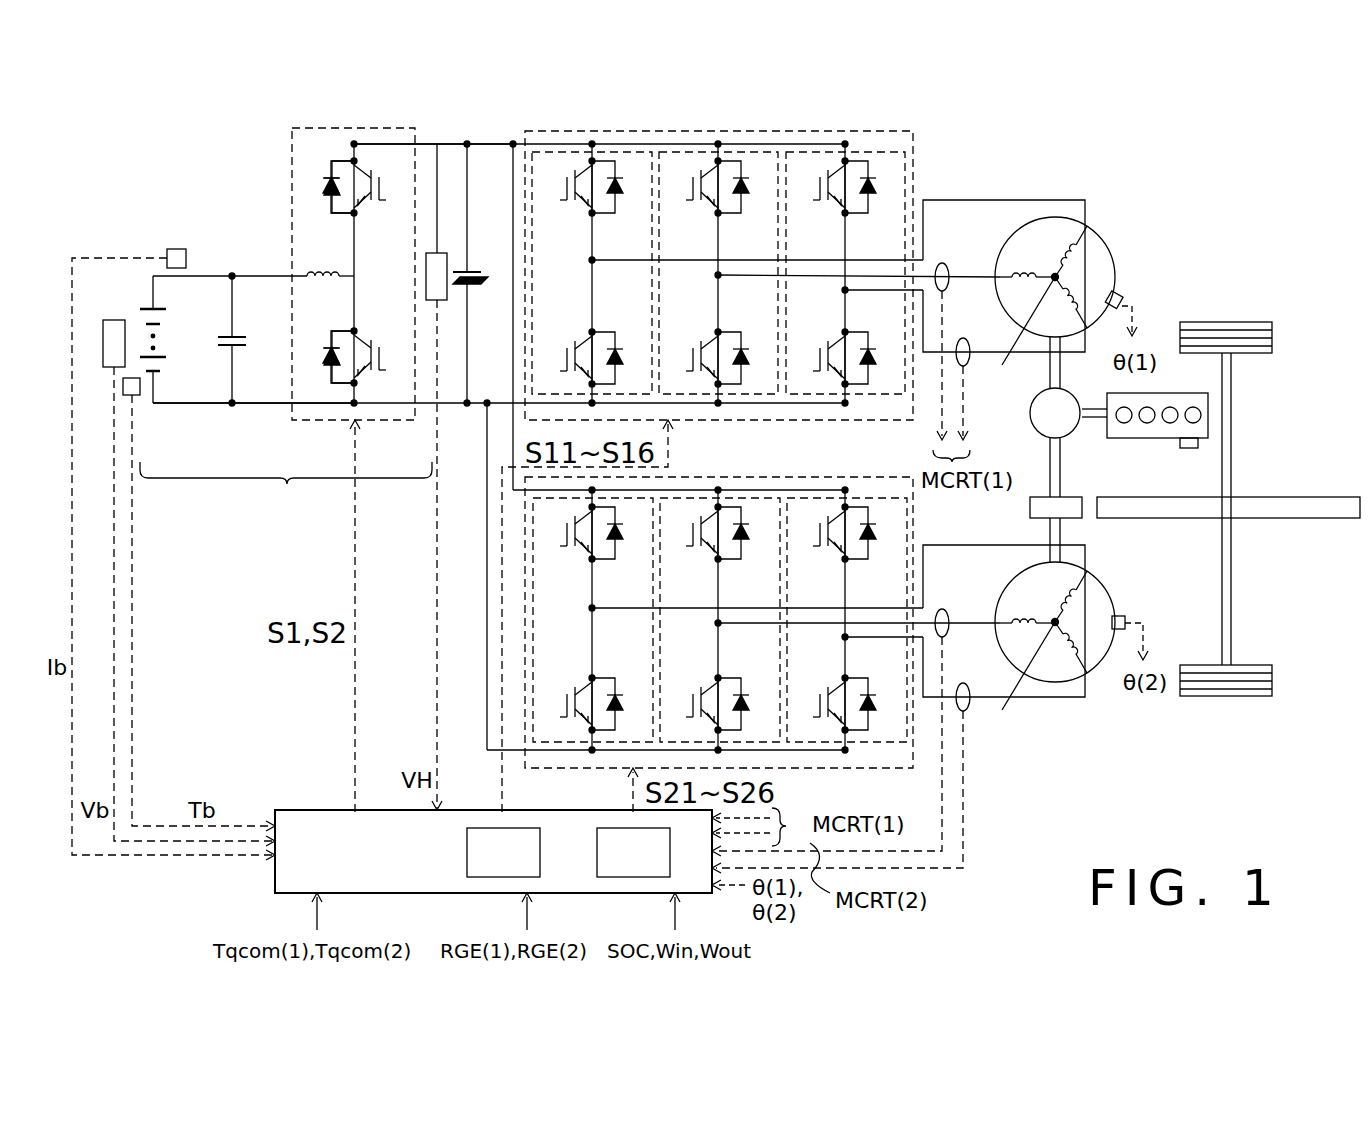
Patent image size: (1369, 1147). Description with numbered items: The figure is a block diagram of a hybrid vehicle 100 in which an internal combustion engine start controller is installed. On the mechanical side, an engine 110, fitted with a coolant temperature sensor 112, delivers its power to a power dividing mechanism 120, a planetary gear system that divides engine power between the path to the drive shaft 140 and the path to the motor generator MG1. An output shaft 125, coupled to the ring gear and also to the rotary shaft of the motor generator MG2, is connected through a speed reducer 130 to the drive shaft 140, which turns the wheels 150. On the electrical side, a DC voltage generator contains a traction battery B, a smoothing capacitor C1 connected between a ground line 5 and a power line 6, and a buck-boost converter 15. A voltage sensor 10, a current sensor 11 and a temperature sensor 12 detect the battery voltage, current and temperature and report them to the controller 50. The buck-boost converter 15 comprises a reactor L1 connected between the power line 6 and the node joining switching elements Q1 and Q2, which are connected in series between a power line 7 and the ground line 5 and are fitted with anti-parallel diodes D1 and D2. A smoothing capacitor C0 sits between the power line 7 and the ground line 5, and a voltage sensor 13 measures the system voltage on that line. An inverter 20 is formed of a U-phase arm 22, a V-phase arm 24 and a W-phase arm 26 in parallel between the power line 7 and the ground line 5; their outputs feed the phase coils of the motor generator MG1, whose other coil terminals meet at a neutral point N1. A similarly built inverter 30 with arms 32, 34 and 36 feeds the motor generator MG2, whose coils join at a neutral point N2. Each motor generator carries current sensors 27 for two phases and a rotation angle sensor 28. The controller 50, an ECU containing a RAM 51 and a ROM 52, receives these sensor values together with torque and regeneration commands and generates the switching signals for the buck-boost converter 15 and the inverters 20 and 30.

The hybrid vehicle 100 is at (1266, 136).
The ground line 5 is at (196, 404).
The power line 6 is at (262, 276).
The power line 7 is at (488, 144).
The voltage sensor 10 is at (113, 320).
The current sensor 11 is at (176, 249).
The temperature sensor 12 is at (140, 393).
The voltage sensor 13 is at (437, 253).
The buck-boost converter 15 is at (302, 420).
The inverter 20 is at (810, 420).
The U-phase arm 22 is at (614, 152).
The V-phase arm 24 is at (742, 152).
The W-phase arm 26 is at (868, 152).
The current sensors 27 is at (945, 263).
The rotation angle sensor 28 is at (1120, 293).
The inverter 30 is at (870, 768).
The U-phase arm 32 is at (650, 490).
The V-phase arm 34 is at (740, 490).
The W-phase arm 36 is at (868, 490).
The controller 50 is at (493, 822).
The RAM 51 is at (540, 852).
The ROM 52 is at (670, 852).
The engine 110 is at (1150, 393).
The coolant temperature sensor 112 is at (1186, 448).
The power dividing mechanism 120 is at (1030, 413).
The output shaft 125 is at (1050, 448).
The speed reducer 130 is at (1090, 494).
The drive shaft 140 is at (1232, 458).
The wheels 150 is at (1226, 322).
The traction battery B is at (165, 308).
The smoothing capacitor C1 is at (246, 338).
The smoothing capacitor C0 is at (476, 270).
The reactor L1 is at (322, 282).
The switching element Q1 is at (378, 202).
The switching element Q2 is at (378, 355).
The anti-parallel diode D1 is at (322, 190).
The anti-parallel diode D2 is at (322, 362).
The motor generator MG1 is at (1097, 228).
The motor generator MG2 is at (1097, 573).
The neutral point N1 is at (1018, 339).
The neutral point N2 is at (1018, 684).